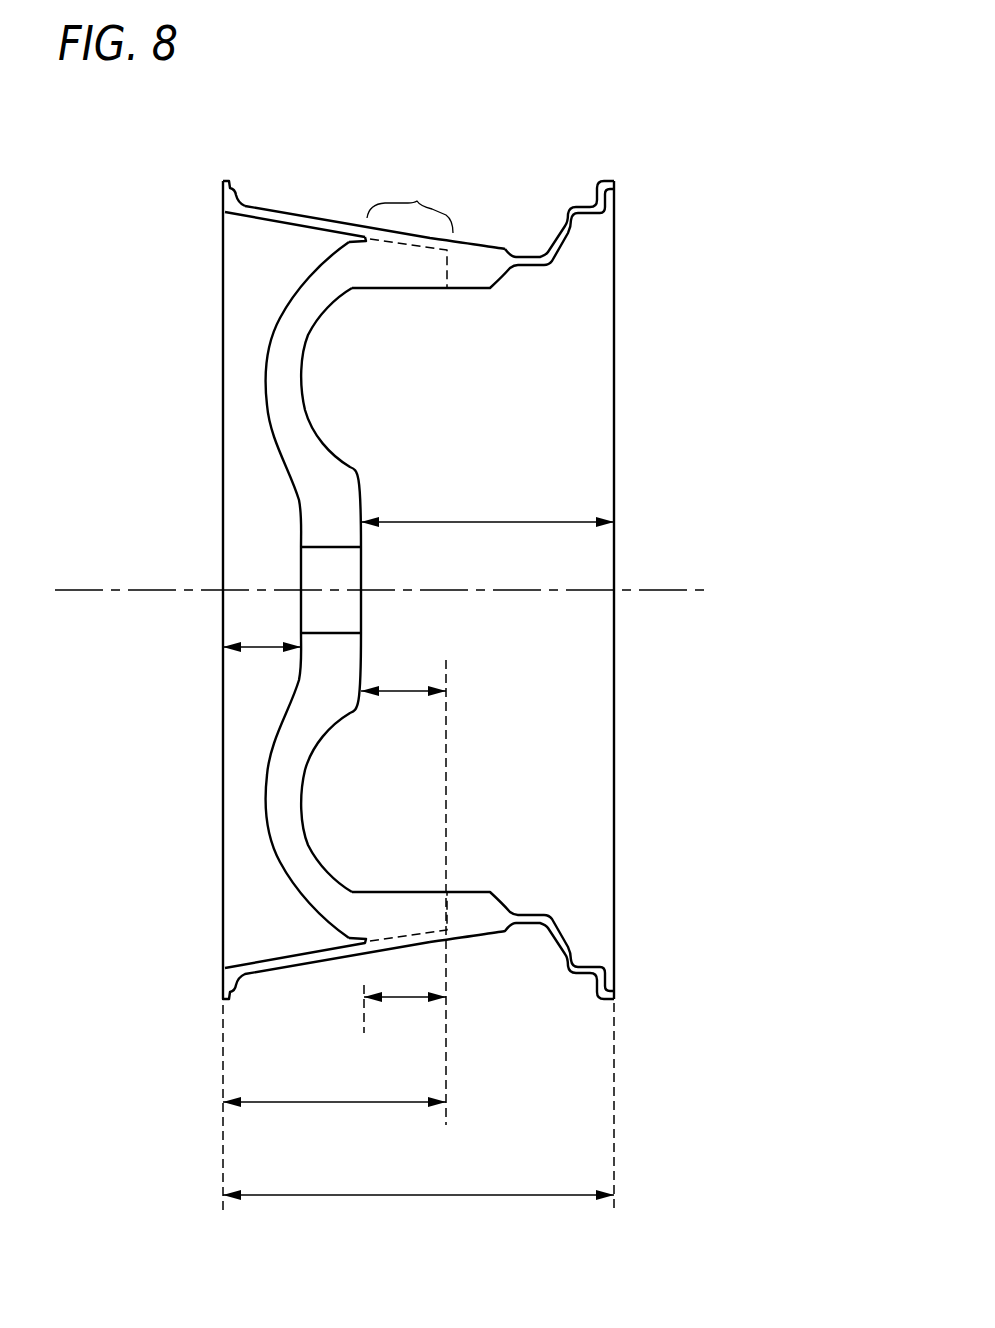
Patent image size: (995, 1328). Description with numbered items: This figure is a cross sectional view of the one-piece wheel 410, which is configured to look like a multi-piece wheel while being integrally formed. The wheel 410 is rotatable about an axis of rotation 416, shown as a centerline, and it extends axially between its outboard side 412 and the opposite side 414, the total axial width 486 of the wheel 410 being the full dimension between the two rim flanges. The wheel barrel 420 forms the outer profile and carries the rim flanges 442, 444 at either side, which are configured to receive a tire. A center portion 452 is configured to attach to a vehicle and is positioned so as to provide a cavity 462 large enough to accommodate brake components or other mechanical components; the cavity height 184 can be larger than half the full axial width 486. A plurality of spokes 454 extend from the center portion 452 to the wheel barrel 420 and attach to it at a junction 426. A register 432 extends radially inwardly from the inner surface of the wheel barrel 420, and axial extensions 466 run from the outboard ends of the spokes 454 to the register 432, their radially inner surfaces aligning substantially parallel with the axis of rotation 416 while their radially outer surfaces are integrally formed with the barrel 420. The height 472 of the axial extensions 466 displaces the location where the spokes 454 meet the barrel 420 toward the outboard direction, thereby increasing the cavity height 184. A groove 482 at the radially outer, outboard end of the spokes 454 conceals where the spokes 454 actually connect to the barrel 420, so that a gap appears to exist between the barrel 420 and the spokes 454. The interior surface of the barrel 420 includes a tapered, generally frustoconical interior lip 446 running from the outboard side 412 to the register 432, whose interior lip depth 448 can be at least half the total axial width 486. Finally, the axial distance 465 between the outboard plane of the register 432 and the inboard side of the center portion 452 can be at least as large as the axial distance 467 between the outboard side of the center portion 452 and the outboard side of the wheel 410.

The one-piece wheel 410 is at (438, 108).
The outboard side 412 is at (160, 470).
The second side 414 is at (667, 472).
The axis of rotation 416 is at (133, 590).
The wheel barrel 420 is at (340, 205).
The junction 426 is at (418, 195).
The register 432 is at (475, 272).
The first flange 442 is at (233, 190).
The second flange 444 is at (598, 183).
The interior lip 446 is at (270, 957).
The interior lip depth 448 is at (283, 1103).
The center portion 452 is at (347, 495).
The spokes 454 is at (300, 722).
The cavity 462 is at (545, 685).
The axial distance 465 is at (402, 690).
The axial extensions 466 is at (393, 267).
The axial distance 467 is at (260, 645).
The height of the axial extensions 472 is at (400, 998).
The groove 482 is at (342, 237).
The total axial width 486 is at (373, 1195).
The cavity height 184 is at (577, 525).